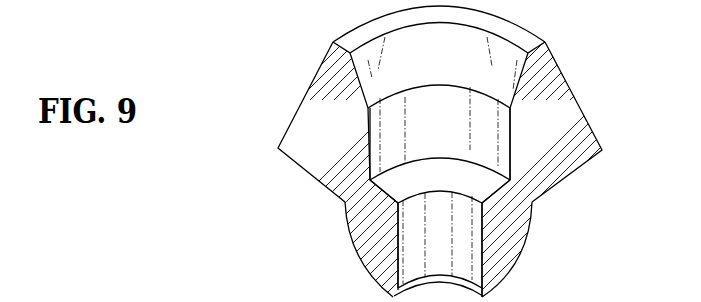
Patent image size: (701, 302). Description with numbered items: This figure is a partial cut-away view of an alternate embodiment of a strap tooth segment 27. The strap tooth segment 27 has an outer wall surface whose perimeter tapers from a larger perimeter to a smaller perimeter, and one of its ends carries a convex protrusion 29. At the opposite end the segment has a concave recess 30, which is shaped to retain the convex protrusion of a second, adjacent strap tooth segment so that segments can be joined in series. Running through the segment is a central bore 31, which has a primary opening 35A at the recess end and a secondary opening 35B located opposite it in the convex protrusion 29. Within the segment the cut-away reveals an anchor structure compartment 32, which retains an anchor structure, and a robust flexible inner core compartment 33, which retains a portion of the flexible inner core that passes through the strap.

The strap tooth segment 27 is at (313, 82).
The convex protrusion 29 is at (352, 243).
The concave recess 30 is at (518, 88).
The central bore 31 is at (368, 150).
The anchor structure compartment 32 is at (437, 122).
The robust flexible inner core compartment 33 is at (432, 223).
The primary opening 35A is at (473, 27).
The secondary opening 35B is at (397, 287).